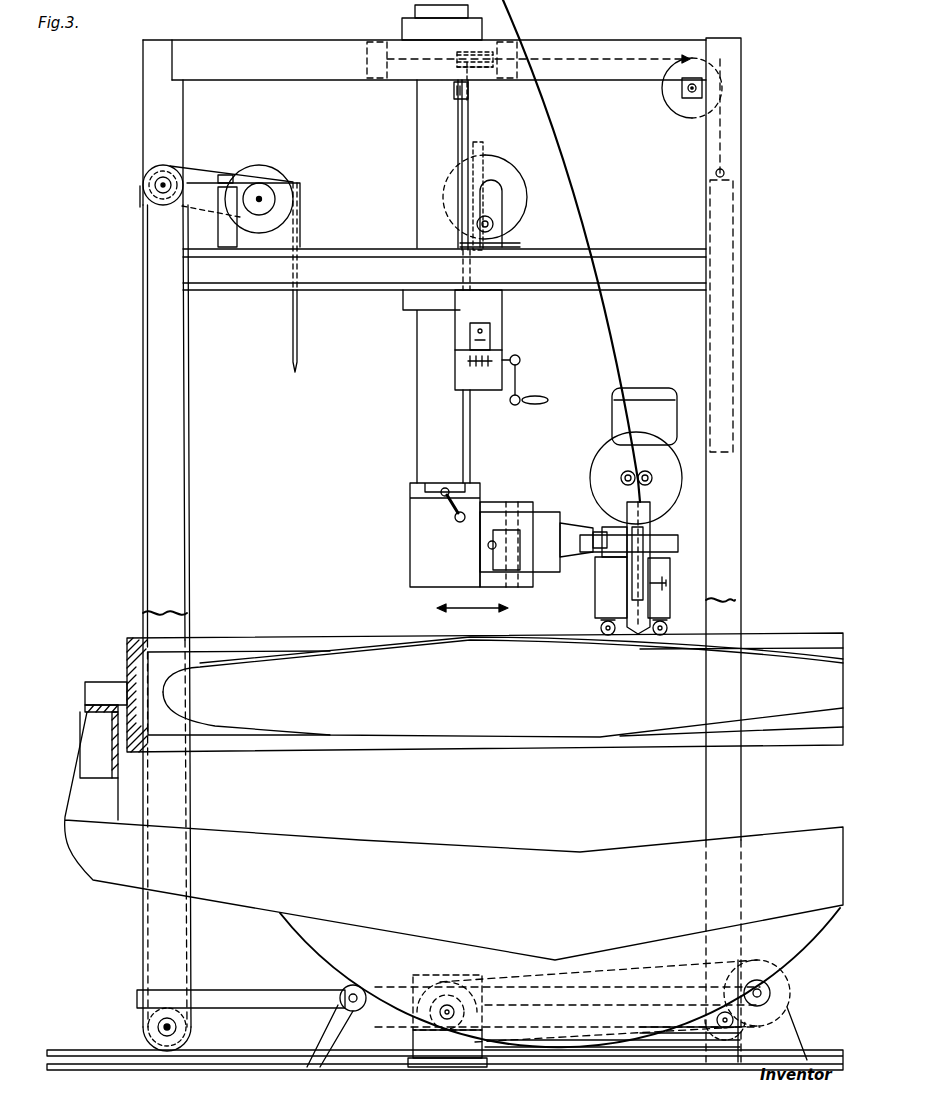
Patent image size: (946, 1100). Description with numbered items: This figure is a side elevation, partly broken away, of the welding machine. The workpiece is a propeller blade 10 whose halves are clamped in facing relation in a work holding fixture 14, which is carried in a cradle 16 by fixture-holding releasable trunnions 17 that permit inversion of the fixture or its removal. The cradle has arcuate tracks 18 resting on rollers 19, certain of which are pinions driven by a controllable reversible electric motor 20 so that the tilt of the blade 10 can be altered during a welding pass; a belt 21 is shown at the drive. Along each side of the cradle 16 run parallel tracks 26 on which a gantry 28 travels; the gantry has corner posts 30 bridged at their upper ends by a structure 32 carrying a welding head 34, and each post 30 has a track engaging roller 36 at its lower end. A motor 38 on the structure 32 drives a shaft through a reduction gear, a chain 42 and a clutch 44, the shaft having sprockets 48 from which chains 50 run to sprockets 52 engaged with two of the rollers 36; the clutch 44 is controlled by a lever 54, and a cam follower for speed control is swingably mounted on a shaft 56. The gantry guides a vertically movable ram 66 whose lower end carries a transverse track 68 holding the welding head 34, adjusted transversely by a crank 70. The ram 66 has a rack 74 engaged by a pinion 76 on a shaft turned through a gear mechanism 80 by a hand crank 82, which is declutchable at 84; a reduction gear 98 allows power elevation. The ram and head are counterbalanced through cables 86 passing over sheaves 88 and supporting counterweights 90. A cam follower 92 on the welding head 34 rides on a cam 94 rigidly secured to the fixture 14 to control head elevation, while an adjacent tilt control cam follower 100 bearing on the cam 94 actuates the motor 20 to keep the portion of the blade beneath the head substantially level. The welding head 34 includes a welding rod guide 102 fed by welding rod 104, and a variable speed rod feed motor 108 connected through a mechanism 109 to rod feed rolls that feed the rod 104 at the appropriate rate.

The propeller blade 10 is at (369, 665).
The work holding fixture 14 is at (240, 645).
The cradle 16 is at (386, 848).
The fixture-holding releasable trunnions 17 is at (100, 684).
The arcuate tracks 18 is at (318, 951).
The rollers 19 is at (349, 1009).
The controllable reversible electric motor 20 is at (440, 975).
The drive belt 21 is at (413, 1026).
The parallel tracks 26 is at (96, 1052).
The gantry 28 is at (139, 511).
The corner posts 30 is at (172, 553).
The structure 32 is at (303, 82).
The welding head 34 is at (608, 568).
The track engaging roller 36 is at (198, 1030).
The motor 38 is at (279, 166).
The chain 42 is at (208, 168).
The clutch 44 is at (144, 174).
The sprockets 48 is at (148, 196).
The chains 50 is at (143, 406).
The sprockets 52 is at (160, 1052).
The lever 54 is at (293, 329).
The shaft 56 is at (660, 566).
The vertically movable ram 66 is at (418, 340).
The transverse track 68 is at (410, 488).
The crank 70 is at (444, 510).
The rack 74 is at (479, 150).
The pinion 76 is at (493, 222).
The gear mechanism 80 is at (481, 382).
The hand crank 82 is at (520, 381).
The declutchable connection 84 is at (491, 336).
The cables 86 is at (620, 57).
The sheaves 88 is at (457, 55).
The counterweights 90 is at (735, 218).
The cam follower 92 is at (602, 628).
The cam 94 is at (328, 648).
The reduction gear 98 is at (501, 193).
The tilt control cam follower 100 is at (667, 629).
The welding rod guide 102 is at (646, 611).
The welding rod 104 is at (556, 112).
The variable speed rod feed motor 108 is at (650, 388).
The mechanism 109 is at (660, 492).